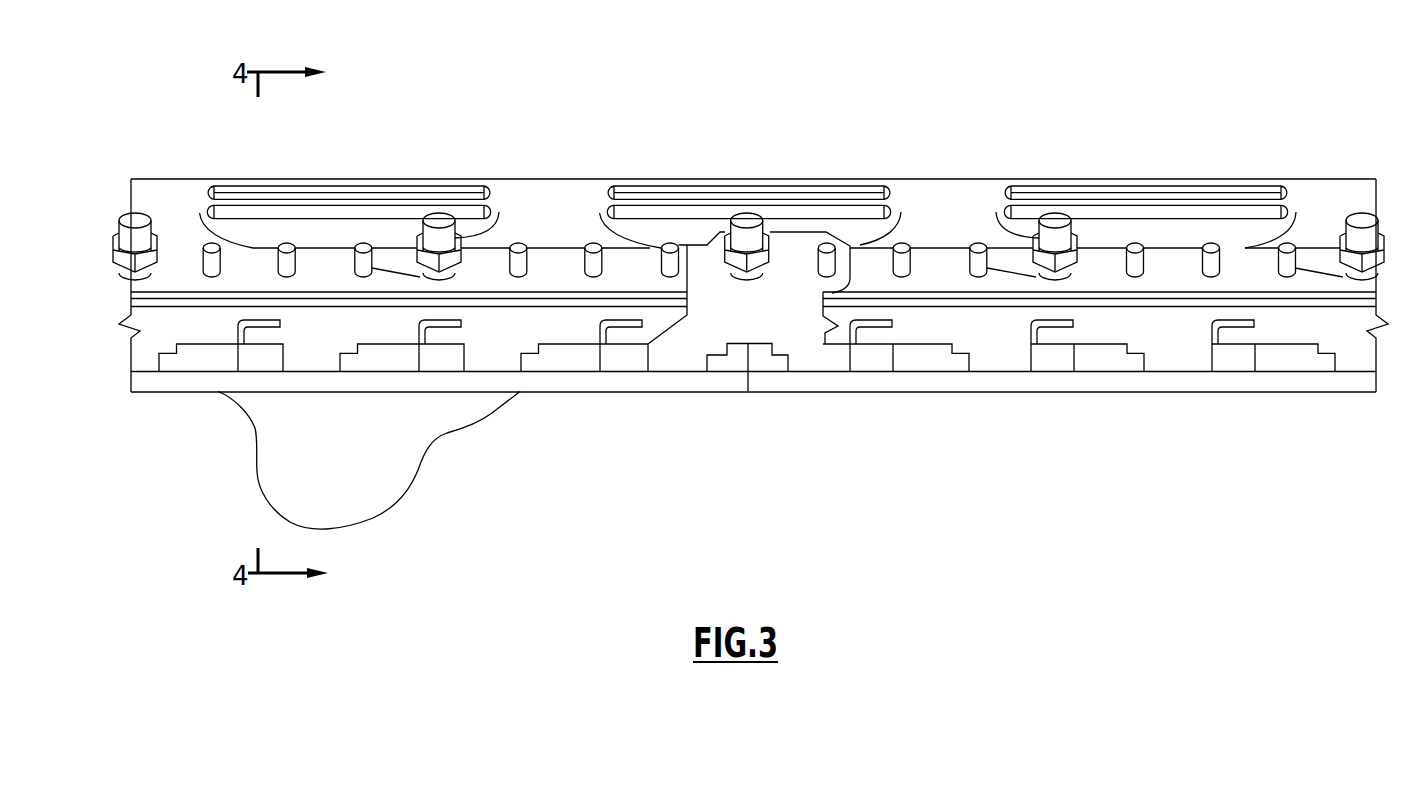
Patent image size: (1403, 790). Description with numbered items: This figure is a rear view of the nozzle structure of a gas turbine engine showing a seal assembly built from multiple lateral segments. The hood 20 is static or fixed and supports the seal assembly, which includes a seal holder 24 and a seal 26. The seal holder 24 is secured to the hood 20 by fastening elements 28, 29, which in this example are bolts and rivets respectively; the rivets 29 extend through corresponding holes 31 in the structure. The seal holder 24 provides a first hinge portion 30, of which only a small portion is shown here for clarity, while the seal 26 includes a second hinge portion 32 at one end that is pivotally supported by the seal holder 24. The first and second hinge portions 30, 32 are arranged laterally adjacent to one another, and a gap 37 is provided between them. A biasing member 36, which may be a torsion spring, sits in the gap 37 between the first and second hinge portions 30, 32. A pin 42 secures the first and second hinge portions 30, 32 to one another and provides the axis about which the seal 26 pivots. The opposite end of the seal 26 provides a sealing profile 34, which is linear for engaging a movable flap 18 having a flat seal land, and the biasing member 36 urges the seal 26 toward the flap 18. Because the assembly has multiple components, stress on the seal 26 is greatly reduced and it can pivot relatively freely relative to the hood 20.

The movable flap 18 is at (366, 498).
The hood 20 is at (569, 197).
The seal holder 24 is at (717, 322).
The seal 26 is at (600, 382).
The fastening element 28 is at (747, 242).
The rivet 29 is at (825, 255).
The first hinge portion 30 is at (822, 358).
The hole 31 is at (850, 278).
The second hinge portion 32 is at (762, 355).
The sealing profile 34 is at (643, 393).
The biasing member 36 is at (876, 372).
The gap 37 is at (1063, 380).
The pin 42 is at (1010, 360).